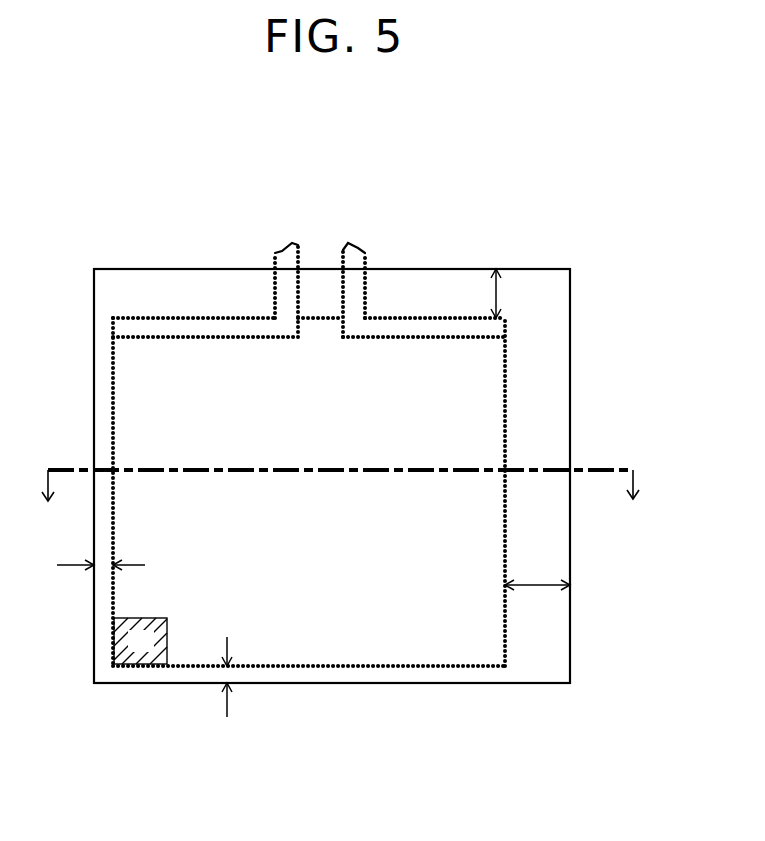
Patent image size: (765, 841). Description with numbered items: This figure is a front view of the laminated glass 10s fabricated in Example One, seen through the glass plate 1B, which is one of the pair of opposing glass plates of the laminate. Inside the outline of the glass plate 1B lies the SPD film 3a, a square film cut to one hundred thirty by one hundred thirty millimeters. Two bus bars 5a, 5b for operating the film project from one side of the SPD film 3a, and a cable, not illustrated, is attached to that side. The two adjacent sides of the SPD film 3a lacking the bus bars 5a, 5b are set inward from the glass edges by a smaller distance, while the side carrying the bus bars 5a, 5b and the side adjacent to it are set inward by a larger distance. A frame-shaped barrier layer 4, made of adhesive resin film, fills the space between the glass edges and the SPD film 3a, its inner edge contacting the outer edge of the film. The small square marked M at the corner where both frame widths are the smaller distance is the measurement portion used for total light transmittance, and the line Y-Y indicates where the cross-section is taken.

The laminated glass 10s is at (515, 217).
The glass plate 1B is at (562, 385).
The barrier layer 4 is at (105, 435).
The bus bar 5a is at (232, 327).
The bus bar 5b is at (427, 327).
The SPD film 3a is at (335, 617).